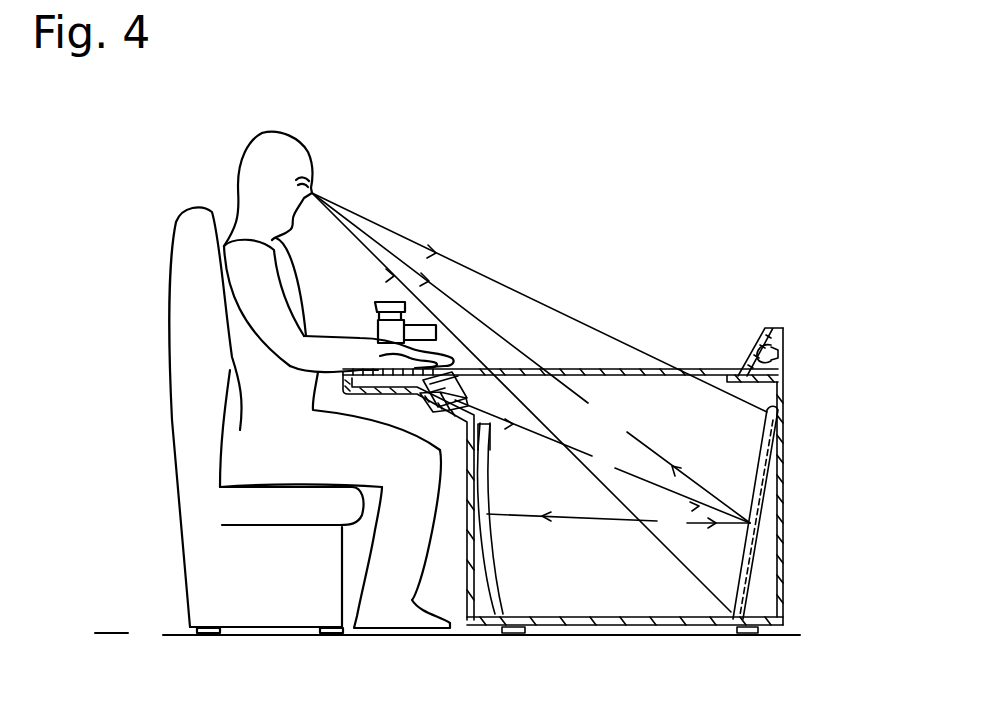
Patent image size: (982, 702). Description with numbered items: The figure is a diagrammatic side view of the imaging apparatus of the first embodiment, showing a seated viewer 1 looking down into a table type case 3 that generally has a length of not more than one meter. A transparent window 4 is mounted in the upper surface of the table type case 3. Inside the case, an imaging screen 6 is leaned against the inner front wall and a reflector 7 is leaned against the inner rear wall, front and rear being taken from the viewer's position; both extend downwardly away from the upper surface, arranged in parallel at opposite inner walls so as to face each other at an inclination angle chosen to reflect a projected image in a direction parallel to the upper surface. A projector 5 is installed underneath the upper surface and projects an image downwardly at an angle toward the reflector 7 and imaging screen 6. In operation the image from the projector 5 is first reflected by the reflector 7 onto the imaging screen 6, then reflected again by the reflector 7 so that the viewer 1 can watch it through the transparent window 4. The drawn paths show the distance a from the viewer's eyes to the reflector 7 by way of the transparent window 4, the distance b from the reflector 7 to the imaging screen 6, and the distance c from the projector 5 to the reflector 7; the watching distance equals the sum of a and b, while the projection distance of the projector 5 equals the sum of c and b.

The viewer 1 is at (266, 432).
The table type case 3 is at (782, 563).
The transparent window 4 is at (657, 377).
The projector 5 is at (453, 383).
The imaging screen 6 is at (500, 573).
The reflector 7 is at (758, 473).
The distance from the viewer's eyes to the reflector a is at (531, 358).
The distance from the reflector to the imaging screen b is at (618, 523).
The distance from the projector to the reflector c is at (602, 461).